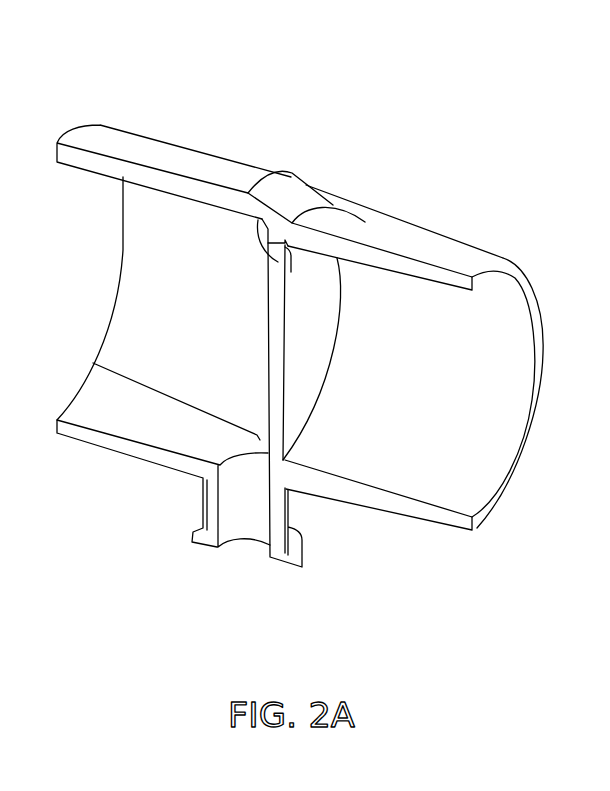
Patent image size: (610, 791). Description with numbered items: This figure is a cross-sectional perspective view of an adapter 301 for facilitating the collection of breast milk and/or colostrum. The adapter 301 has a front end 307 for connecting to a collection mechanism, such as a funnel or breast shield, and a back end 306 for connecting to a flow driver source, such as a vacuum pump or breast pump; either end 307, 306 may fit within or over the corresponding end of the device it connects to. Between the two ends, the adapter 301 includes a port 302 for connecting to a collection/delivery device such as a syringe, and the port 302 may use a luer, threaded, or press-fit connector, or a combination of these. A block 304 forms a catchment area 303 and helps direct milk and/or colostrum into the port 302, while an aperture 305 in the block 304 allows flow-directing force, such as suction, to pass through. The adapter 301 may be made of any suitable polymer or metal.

The adapter 301 is at (120, 144).
The port 302 is at (252, 528).
The catchment area 303 is at (98, 370).
The block 304 is at (339, 322).
The aperture 305 is at (303, 180).
The back end 306 is at (521, 396).
The front end 307 is at (85, 268).